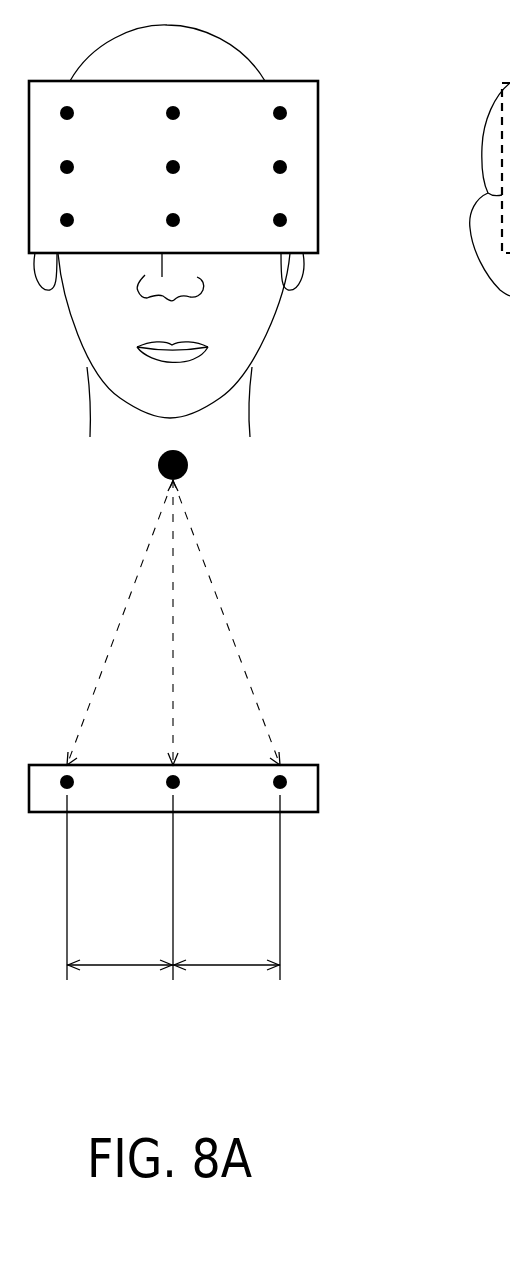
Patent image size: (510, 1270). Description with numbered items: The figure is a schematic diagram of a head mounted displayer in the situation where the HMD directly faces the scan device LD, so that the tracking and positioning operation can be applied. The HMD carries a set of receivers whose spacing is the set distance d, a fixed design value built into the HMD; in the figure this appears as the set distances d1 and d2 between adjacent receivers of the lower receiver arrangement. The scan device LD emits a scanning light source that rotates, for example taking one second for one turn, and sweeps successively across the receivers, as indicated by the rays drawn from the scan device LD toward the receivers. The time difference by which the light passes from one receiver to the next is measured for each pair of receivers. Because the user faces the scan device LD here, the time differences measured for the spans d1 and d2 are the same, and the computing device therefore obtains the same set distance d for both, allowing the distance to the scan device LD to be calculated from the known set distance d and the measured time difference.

The scan device LD is at (188, 465).
The set distance d is at (273, 113).
The set distance d1 is at (99, 917).
The set distance d2 is at (244, 917).